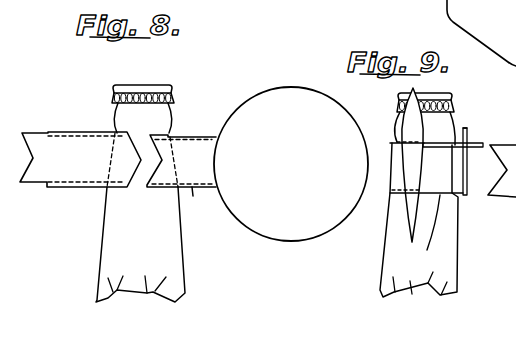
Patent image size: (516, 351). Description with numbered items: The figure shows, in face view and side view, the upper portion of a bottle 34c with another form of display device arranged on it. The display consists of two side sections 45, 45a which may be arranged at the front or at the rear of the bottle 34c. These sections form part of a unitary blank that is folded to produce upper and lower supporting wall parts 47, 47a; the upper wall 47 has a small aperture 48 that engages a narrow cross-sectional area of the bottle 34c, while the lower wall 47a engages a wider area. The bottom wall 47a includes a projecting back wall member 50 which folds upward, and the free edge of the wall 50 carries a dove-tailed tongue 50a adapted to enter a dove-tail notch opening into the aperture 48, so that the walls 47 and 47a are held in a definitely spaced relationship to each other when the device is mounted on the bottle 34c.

In FIG. 8, the side section 45 is at (270, 97).
In FIG. 9, the side section 45 is at (410, 213).
In FIG. 8, the side section 45a is at (65, 145).
In FIG. 9, the side section 45a is at (515, 129).
In FIG. 8, the upper supporting wall part 47 is at (192, 133).
In FIG. 9, the upper supporting wall part 47 is at (427, 97).
In FIG. 8, the lower supporting wall part 47a is at (193, 193).
In FIG. 9, the lower supporting wall part 47a is at (427, 251).
In FIG. 8, the bottle 34c is at (103, 237).
In FIG. 9, the bottle 34c is at (410, 283).
In FIG. 9, the back wall member 50 is at (467, 178).
In FIG. 9, the dove-tailed tongue 50a is at (465, 127).
In FIG. 9, the small aperture 48 is at (509, 288).